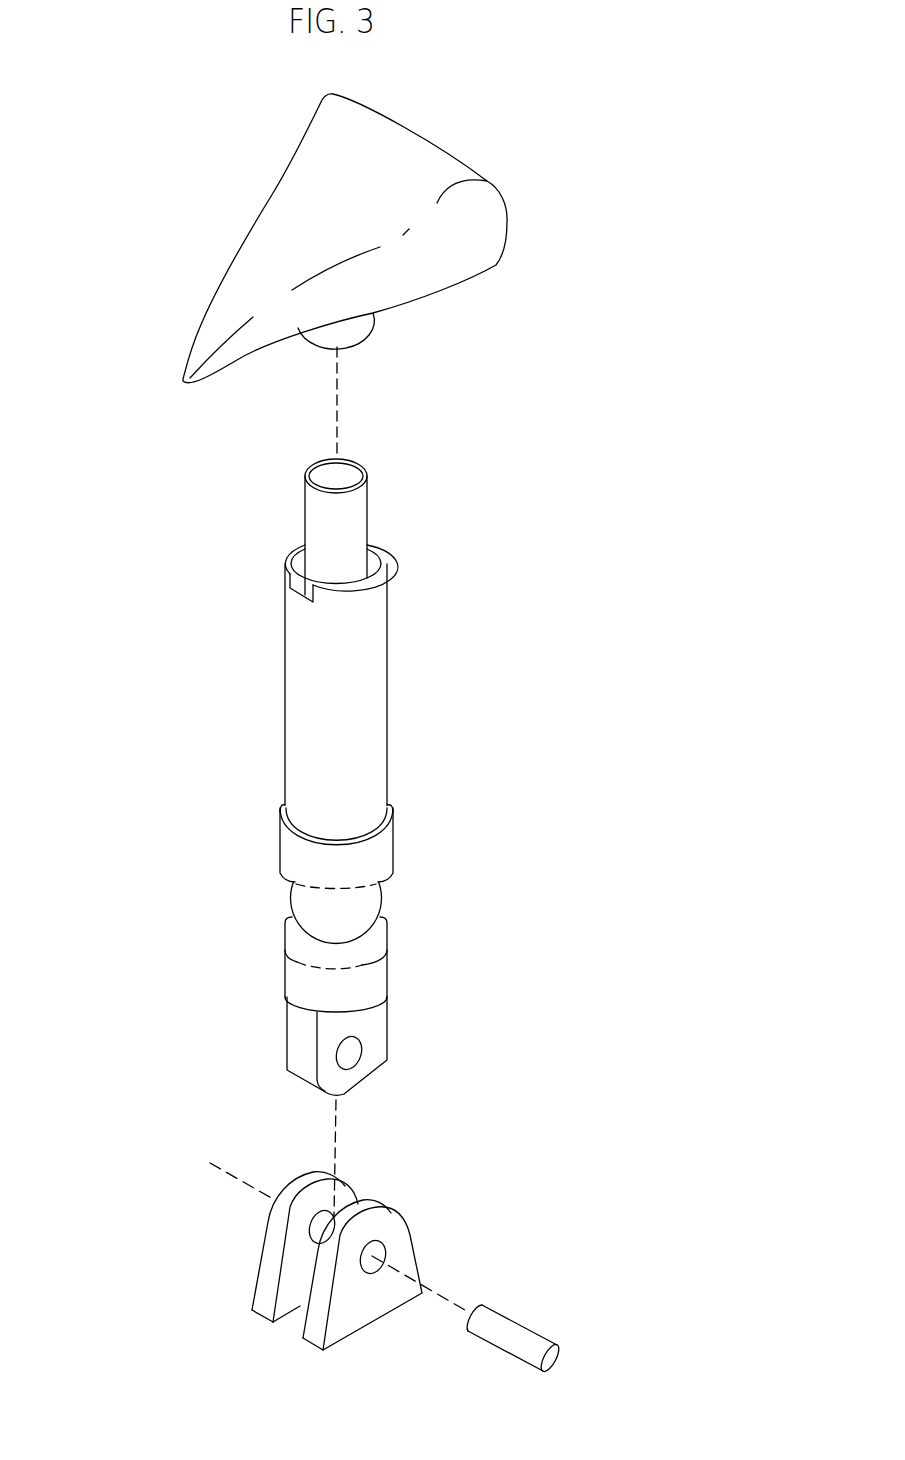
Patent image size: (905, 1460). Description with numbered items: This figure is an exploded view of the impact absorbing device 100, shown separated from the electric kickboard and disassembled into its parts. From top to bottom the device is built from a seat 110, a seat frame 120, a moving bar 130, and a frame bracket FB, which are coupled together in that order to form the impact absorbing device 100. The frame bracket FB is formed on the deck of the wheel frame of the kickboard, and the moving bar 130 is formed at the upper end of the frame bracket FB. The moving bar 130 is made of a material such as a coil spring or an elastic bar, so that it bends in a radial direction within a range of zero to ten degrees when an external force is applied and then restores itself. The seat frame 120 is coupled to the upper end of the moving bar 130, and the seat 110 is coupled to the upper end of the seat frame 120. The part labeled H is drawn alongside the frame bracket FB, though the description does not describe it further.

The impact absorbing device 100 is at (93, 142).
The seat 110 is at (477, 240).
The seat frame 120 is at (415, 700).
The moving bar 130 is at (360, 905).
The frame bracket FB is at (393, 1228).
The hinge pin H is at (507, 1327).